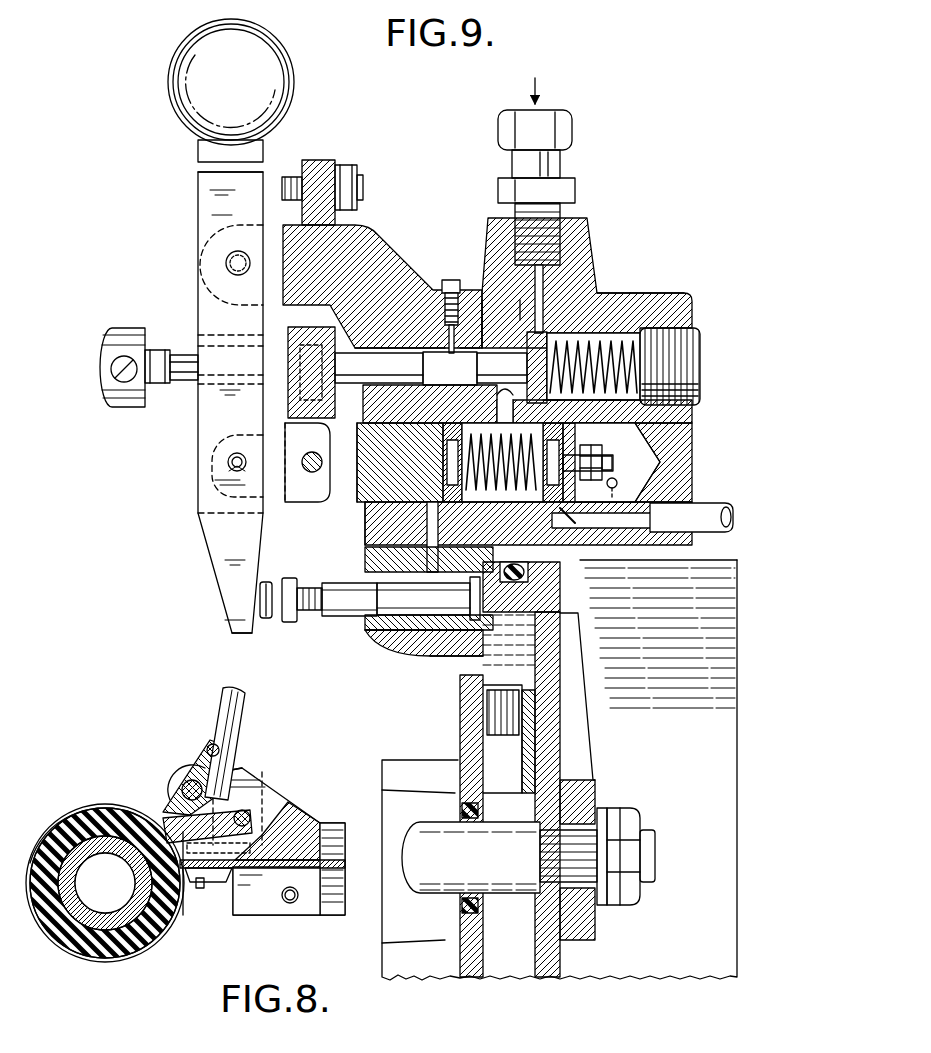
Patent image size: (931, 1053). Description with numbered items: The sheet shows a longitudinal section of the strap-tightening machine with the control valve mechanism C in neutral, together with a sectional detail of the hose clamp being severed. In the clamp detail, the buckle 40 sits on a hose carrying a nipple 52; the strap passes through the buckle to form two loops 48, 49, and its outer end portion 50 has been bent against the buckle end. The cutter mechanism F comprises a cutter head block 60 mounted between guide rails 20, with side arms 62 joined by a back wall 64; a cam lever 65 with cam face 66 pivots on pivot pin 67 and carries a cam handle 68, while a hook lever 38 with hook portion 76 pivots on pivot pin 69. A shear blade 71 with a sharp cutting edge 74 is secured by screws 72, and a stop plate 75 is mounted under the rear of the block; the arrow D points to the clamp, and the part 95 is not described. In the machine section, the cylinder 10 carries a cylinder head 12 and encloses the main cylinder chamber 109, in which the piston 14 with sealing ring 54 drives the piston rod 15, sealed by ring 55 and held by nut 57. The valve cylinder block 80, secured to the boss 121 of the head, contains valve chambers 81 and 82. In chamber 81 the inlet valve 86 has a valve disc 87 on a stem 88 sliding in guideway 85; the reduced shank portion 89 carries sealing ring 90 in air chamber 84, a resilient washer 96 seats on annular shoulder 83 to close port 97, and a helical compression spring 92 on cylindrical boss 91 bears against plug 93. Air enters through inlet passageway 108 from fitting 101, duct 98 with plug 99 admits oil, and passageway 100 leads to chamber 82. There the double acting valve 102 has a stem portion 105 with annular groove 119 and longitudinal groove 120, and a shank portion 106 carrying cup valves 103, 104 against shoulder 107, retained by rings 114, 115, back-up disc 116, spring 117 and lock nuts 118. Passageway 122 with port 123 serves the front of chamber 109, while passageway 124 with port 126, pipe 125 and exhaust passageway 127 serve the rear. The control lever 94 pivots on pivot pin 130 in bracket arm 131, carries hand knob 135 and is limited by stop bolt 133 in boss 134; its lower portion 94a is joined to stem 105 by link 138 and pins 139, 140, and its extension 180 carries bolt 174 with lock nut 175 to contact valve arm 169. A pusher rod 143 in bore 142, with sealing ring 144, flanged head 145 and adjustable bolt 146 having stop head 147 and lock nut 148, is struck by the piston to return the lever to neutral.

In FIG. 9, the cylinder 10 is at (660, 965).
In FIG. 9, the cylinder head 12 is at (380, 645).
In FIG. 9, the piston 14 is at (553, 700).
In FIG. 9, the piston rod 15 is at (420, 890).
In FIG. 8, the guide rail 20 is at (332, 908).
In FIG. 8, the hook lever 38 is at (240, 870).
In FIG. 8, the buckle 40 is at (140, 882).
In FIG. 8, the strap loop 48 is at (55, 835).
In FIG. 8, the strap loop 49 is at (72, 948).
In FIG. 8, the strap end portion 50 is at (276, 877).
In FIG. 8, the nipple 52 is at (88, 830).
In FIG. 9, the resilient sealing ring 54 is at (522, 578).
In FIG. 9, the resilient sealing ring 55 is at (462, 810).
In FIG. 9, the nut 57 is at (620, 812).
In FIG. 8, the cutter head block 60 is at (268, 784).
In FIG. 8, the side arm 62 is at (238, 778).
In FIG. 8, the back wall 64 is at (290, 818).
In FIG. 8, the cam lever 65 is at (195, 765).
In FIG. 8, the cam face 66 is at (166, 822).
In FIG. 8, the pivot pin 67 is at (184, 783).
In FIG. 8, the cam handle 68 is at (222, 706).
In FIG. 8, the pivot pin 69 is at (242, 812).
In FIG. 8, the shear blade 71 is at (222, 884).
In FIG. 8, the screw 72 is at (200, 890).
In FIG. 8, the cutting edge 74 is at (184, 918).
In FIG. 8, the stop plate 75 is at (292, 904).
In FIG. 8, the hook portion 76 is at (133, 865).
In FIG. 9, the cylinder block 80 is at (377, 224).
In FIG. 9, the valve chamber 81 is at (642, 302).
In FIG. 9, the valve chamber 82 is at (668, 435).
In FIG. 9, the annular shoulder 83 is at (522, 340).
In FIG. 9, the air chamber 84 is at (495, 345).
In FIG. 9, the guideway 85 is at (388, 350).
In FIG. 9, the inlet valve 86 is at (620, 300).
In FIG. 9, the valve disc 87 is at (530, 365).
In FIG. 9, the valve stem 88 is at (380, 376).
In FIG. 9, the reduced shank portion 89 is at (480, 352).
In FIG. 9, the resilient sealing ring 90 is at (424, 352).
In FIG. 9, the cylindrical boss 91 is at (590, 370).
In FIG. 9, the helical compression spring 92 is at (665, 305).
In FIG. 9, the plug 93 is at (690, 352).
In FIG. 9, the control lever 94 is at (193, 215).
In FIG. 9, the lower portion of control lever 94a is at (228, 600).
In FIG. 9, the knob 95 is at (124, 330).
In FIG. 9, the resilient washer 96 is at (552, 335).
In FIG. 9, the air inlet port 97 is at (530, 352).
In FIG. 9, the duct 98 is at (447, 352).
In FIG. 9, the removable plug 99 is at (452, 282).
In FIG. 9, the air passageway 100 is at (562, 411).
In FIG. 9, the fitting 101 is at (560, 162).
In FIG. 9, the double acting valve 102 is at (372, 494).
In FIG. 9, the slide valve disc 103 is at (497, 412).
In FIG. 9, the slide valve disc 104 is at (600, 411).
In FIG. 9, the stem portion 105 is at (360, 448).
In FIG. 9, the shank portion 106 is at (527, 490).
In FIG. 9, the annular shoulder 107 is at (458, 500).
In FIG. 9, the air inlet passageway 108 is at (535, 290).
In FIG. 9, the main cylinder chamber 109 is at (700, 681).
In FIG. 9, the retainer ring 114 is at (445, 441).
In FIG. 9, the retainer ring 115 is at (585, 452).
In FIG. 9, the back-up disc 116 is at (610, 486).
In FIG. 9, the helical compression spring 117 is at (607, 486).
In FIG. 9, the lock nut 118 is at (612, 452).
In FIG. 9, the annular groove 119 is at (430, 404).
In FIG. 9, the longitudinal groove 120 is at (378, 478).
In FIG. 9, the boss 121 is at (425, 568).
In FIG. 9, the air passageway 122 is at (423, 598).
In FIG. 9, the port 123 is at (415, 537).
In FIG. 9, the passageway 124 is at (622, 540).
In FIG. 9, the pipe 125 is at (733, 517).
In FIG. 9, the port 126 is at (588, 535).
In FIG. 9, the passageway 127 is at (617, 483).
In FIG. 9, the pivot pin 130 is at (226, 263).
In FIG. 9, the bracket arm 131 is at (272, 237).
In FIG. 9, the adjustable stop bolt 133 is at (365, 180).
In FIG. 9, the boss 134 is at (318, 166).
In FIG. 9, the hand knob 135 is at (178, 80).
In FIG. 9, the link 138 is at (279, 497).
In FIG. 9, the pin 139 is at (312, 472).
In FIG. 9, the pin 140 is at (228, 462).
In FIG. 9, the bore 142 is at (368, 627).
In FIG. 9, the pusher rod 143 is at (408, 628).
In FIG. 9, the sealing ring 144 is at (372, 585).
In FIG. 9, the flanged head portion 145 is at (473, 612).
In FIG. 9, the adjustable bolt 146 is at (312, 590).
In FIG. 9, the adjustable stop head 147 is at (265, 620).
In FIG. 9, the lock nut 148 is at (290, 622).
In FIG. 9, the valve arm 169 is at (290, 333).
In FIG. 9, the threaded bolt 174 is at (170, 378).
In FIG. 9, the lock nut 175 is at (186, 352).
In FIG. 9, the extension 180 is at (236, 380).
In FIG. 9, the control valve mechanism C is at (630, 256).
In FIG. 8, the roller assembly D is at (128, 963).
In FIG. 8, the cutter mechanism F is at (252, 768).